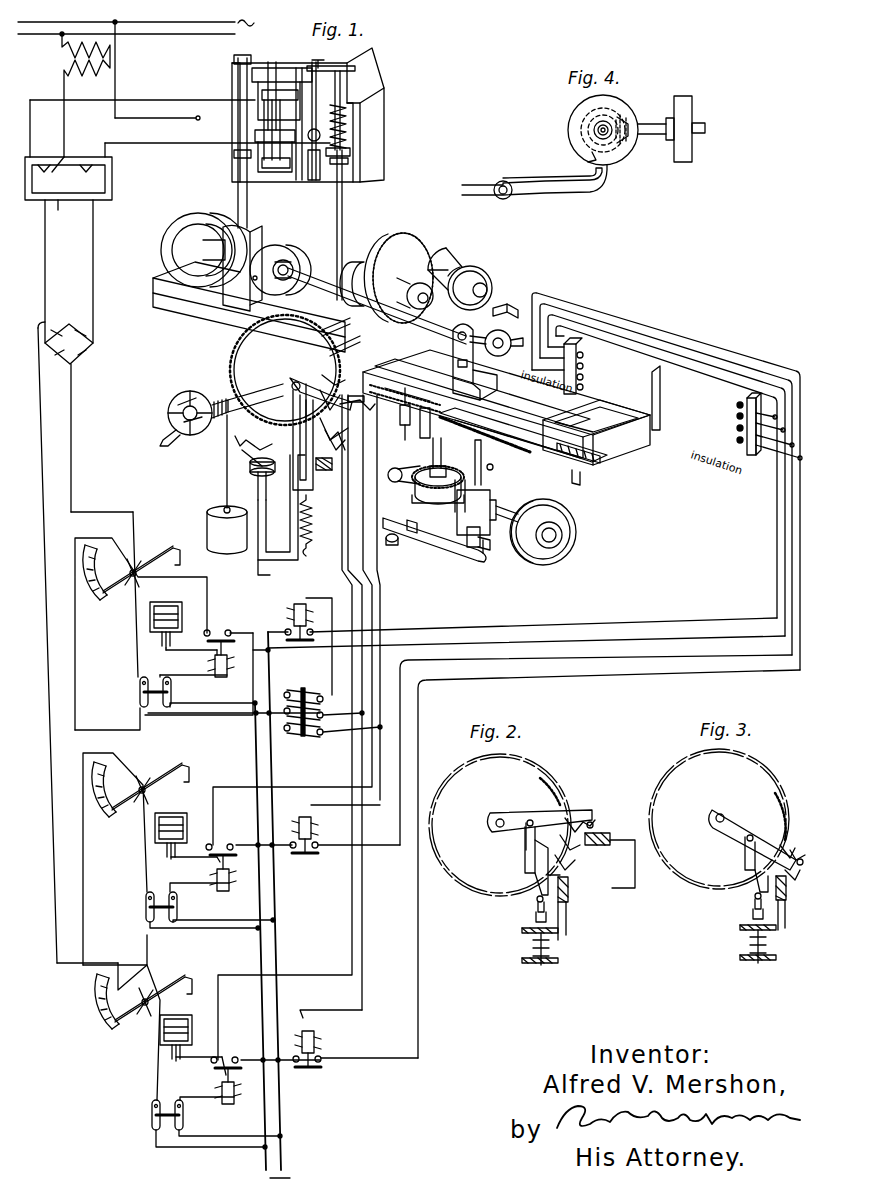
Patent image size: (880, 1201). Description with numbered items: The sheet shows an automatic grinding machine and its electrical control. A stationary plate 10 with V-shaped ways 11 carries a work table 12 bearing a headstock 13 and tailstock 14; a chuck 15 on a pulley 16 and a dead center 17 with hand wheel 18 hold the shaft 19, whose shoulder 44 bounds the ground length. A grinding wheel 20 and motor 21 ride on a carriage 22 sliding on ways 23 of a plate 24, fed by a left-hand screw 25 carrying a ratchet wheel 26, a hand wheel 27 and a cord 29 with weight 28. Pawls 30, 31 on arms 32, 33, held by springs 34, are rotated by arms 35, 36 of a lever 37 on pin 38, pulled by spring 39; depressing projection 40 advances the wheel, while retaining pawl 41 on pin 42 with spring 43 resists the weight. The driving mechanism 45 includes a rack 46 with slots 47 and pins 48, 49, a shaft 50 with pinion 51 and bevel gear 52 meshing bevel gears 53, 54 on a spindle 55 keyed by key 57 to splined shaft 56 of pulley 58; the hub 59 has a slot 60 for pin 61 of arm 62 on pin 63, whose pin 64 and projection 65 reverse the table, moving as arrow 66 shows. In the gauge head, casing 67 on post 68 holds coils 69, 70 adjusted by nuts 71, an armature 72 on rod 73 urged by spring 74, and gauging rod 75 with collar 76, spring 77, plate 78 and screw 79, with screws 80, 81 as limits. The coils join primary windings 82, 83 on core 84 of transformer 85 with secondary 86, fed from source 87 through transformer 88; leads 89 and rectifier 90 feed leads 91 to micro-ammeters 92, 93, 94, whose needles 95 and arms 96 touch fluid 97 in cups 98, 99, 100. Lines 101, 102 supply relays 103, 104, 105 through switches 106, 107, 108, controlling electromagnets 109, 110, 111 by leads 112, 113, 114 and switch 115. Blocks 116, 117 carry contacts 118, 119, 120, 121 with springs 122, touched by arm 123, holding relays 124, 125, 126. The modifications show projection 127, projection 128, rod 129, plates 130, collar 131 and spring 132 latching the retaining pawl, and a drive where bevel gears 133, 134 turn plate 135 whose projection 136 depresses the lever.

In FIG. 1, the stationary plate 10 is at (634, 462).
In FIG. 1, the V-shaped ways 11 is at (604, 440).
In FIG. 1, the work table 12 is at (506, 404).
In FIG. 1, the headstock 13 is at (224, 288).
In FIG. 1, the tailstock 14 is at (450, 368).
In FIG. 1, the chuck 15 is at (286, 248).
In FIG. 1, the rotatable pulley 16 is at (186, 225).
In FIG. 1, the dead center 17 is at (475, 362).
In FIG. 1, the hand wheel 18 is at (508, 354).
In FIG. 1, the shaft 19 is at (318, 290).
In FIG. 1, the grinding wheel 20 is at (402, 238).
In FIG. 1, the electric motor 21 is at (470, 255).
In FIG. 1, the carriage 22 is at (340, 296).
In FIG. 1, the V-shaped ways 23 is at (517, 303).
In FIG. 1, the stationary plate 24 is at (500, 302).
In FIG. 1, the left-hand screw 25 is at (344, 354).
In FIG. 1, the ratchet wheel 26 is at (234, 353).
In FIG. 2, the ratchet wheel 26 is at (552, 781).
In FIG. 3, the ratchet wheel 26 is at (788, 828).
In FIG. 1, the hand wheel 27 is at (182, 392).
In FIG. 1, the weight 28 is at (214, 506).
In FIG. 1, the cord 29 is at (226, 478).
In FIG. 1, the pawl 30 is at (330, 426).
In FIG. 2, the pawl 30 is at (590, 820).
In FIG. 3, the pawl 30 is at (796, 850).
In FIG. 1, the pawl 31 is at (337, 374).
In FIG. 2, the pawl 31 is at (581, 848).
In FIG. 1, the arm 32 is at (282, 388).
In FIG. 2, the arm 32 is at (515, 812).
In FIG. 3, the arm 32 is at (718, 830).
In FIG. 1, the arm 33 is at (293, 376).
In FIG. 2, the arm 33 is at (500, 830).
In FIG. 1, the springs 34 is at (338, 386).
In FIG. 2, the springs 34 is at (574, 812).
In FIG. 3, the springs 34 is at (798, 862).
In FIG. 1, the upwardly extending arm 35 is at (293, 418).
In FIG. 2, the upwardly extending arm 35 is at (525, 850).
In FIG. 3, the upwardly extending arm 35 is at (745, 855).
In FIG. 1, the upwardly extending arm 36 is at (306, 382).
In FIG. 2, the upwardly extending arm 36 is at (538, 832).
In FIG. 1, the lever 37 is at (428, 541).
In FIG. 4, the lever 37 is at (476, 185).
In FIG. 1, the stationary pin 38 is at (393, 550).
In FIG. 4, the stationary pin 38 is at (500, 198).
In FIG. 1, the helical tension spring 39 is at (313, 514).
In FIG. 1, the bevel shaped projection 40 is at (490, 558).
In FIG. 4, the bevel shaped projection 40 is at (610, 176).
In FIG. 1, the retaining pawl 41 is at (250, 473).
In FIG. 2, the retaining pawl 41 is at (534, 896).
In FIG. 3, the retaining pawl 41 is at (755, 893).
In FIG. 1, the stationary pin 42 is at (248, 459).
In FIG. 1, the tension spring 43 is at (252, 435).
In FIG. 1, the shoulder 44 is at (290, 264).
In FIG. 1, the driving mechanism 45 is at (450, 468).
In FIG. 1, the rack 46 is at (520, 456).
In FIG. 1, the slots 47 is at (412, 386).
In FIG. 1, the pin 48 is at (570, 478).
In FIG. 1, the pin 49 is at (401, 414).
In FIG. 1, the shaft 50 is at (433, 453).
In FIG. 1, the pinion 51 is at (420, 425).
In FIG. 1, the bevel gear 52 is at (452, 476).
In FIG. 1, the bevel gear 53 is at (455, 508).
In FIG. 1, the bevel gear 54 is at (412, 490).
In FIG. 1, the spindle 55 is at (438, 496).
In FIG. 1, the splined shaft 56 is at (480, 520).
In FIG. 4, the splined shaft 56 is at (654, 134).
In FIG. 1, the key 57 is at (508, 511).
In FIG. 1, the pulley 58 is at (574, 522).
In FIG. 4, the pulley 58 is at (684, 96).
In FIG. 1, the hub 59 is at (490, 544).
In FIG. 1, the circular slot 60 is at (503, 506).
In FIG. 1, the pin 61 is at (462, 518).
In FIG. 1, the arm 62 is at (491, 496).
In FIG. 1, the stationary pin 63 is at (493, 468).
In FIG. 1, the pin 64 is at (483, 466).
In FIG. 1, the bevel shaped projection 65 is at (467, 536).
In FIG. 1, the arrow 66 is at (530, 440).
In FIG. 1, the casing 67 is at (376, 92).
In FIG. 1, the post 68 is at (237, 180).
In FIG. 1, the coil 69 is at (292, 72).
In FIG. 1, the coil 70 is at (282, 176).
In FIG. 1, the nuts 71 is at (277, 72).
In FIG. 1, the armature 72 is at (300, 176).
In FIG. 1, the rod 73 is at (315, 180).
In FIG. 1, the helical compression spring 74 is at (350, 161).
In FIG. 1, the gauging rod 75 is at (343, 228).
In FIG. 1, the collar 76 is at (352, 150).
In FIG. 1, the helical compression spring 77 is at (348, 128).
In FIG. 1, the plate 78 is at (343, 80).
In FIG. 1, the adjustable screw 79 is at (322, 64).
In FIG. 1, the adjustable screw 80 is at (340, 66).
In FIG. 1, the adjustable screw 81 is at (311, 169).
In FIG. 1, the primary winding 82 is at (40, 165).
In FIG. 1, the primary winding 83 is at (84, 165).
In FIG. 1, the magnetic core 84 is at (100, 193).
In FIG. 1, the transformer 85 is at (78, 178).
In FIG. 1, the secondary winding 86 is at (62, 193).
In FIG. 1, the alternating current source 87 is at (186, 24).
In FIG. 1, the transformer 88 is at (112, 56).
In FIG. 1, the leads 89 is at (142, 102).
In FIG. 1, the full wave rectifier 90 is at (80, 358).
In FIG. 1, the leads 91 is at (70, 386).
In FIG. 1, the micro-ammeter 92 is at (143, 1031).
In FIG. 1, the micro-ammeter 93 is at (136, 859).
In FIG. 1, the micro-ammeter 94 is at (141, 634).
In FIG. 1, the indicating needles 95 is at (130, 582).
In FIG. 1, the metallic arms 96 is at (176, 551).
In FIG. 1, the electrically conducting fluid 97 is at (166, 606).
In FIG. 1, the metallic cup 98 is at (192, 1036).
In FIG. 1, the metallic cup 99 is at (188, 838).
In FIG. 1, the metallic cup 100 is at (183, 620).
In FIG. 1, the line 101 is at (262, 1158).
In FIG. 1, the line 102 is at (283, 1142).
In FIG. 1, the relay 103 is at (222, 1104).
In FIG. 1, the relay 104 is at (218, 884).
In FIG. 1, the relay 105 is at (216, 674).
In FIG. 1, the switch 106 is at (147, 1120).
In FIG. 1, the switch 107 is at (143, 910).
In FIG. 1, the switch 108 is at (140, 694).
In FIG. 1, the electromagnet 109 is at (328, 471).
In FIG. 2, the electromagnet 109 is at (608, 836).
In FIG. 1, the electromagnet 110 is at (366, 412).
In FIG. 1, the electromagnet 111 is at (258, 492).
In FIG. 2, the electromagnet 111 is at (568, 896).
In FIG. 3, the electromagnet 111 is at (787, 890).
In FIG. 1, the leads 112 is at (342, 551).
In FIG. 2, the leads 112 is at (633, 882).
In FIG. 1, the leads 113 is at (370, 440).
In FIG. 1, the leads 114 is at (270, 525).
In FIG. 2, the leads 114 is at (569, 922).
In FIG. 3, the leads 114 is at (788, 918).
In FIG. 1, the switch 115 is at (300, 738).
In FIG. 1, the block of insulating material 116 is at (580, 340).
In FIG. 1, the block of insulating material 117 is at (756, 393).
In FIG. 1, the contact 118 is at (584, 387).
In FIG. 1, the contact 119 is at (584, 377).
In FIG. 1, the contact 120 is at (584, 366).
In FIG. 1, the contact 121 is at (584, 355).
In FIG. 1, the compression springs 122 is at (574, 396).
In FIG. 1, the metallic arm 123 is at (662, 385).
In FIG. 1, the relay 124 is at (322, 1030).
In FIG. 1, the relay 125 is at (312, 815).
In FIG. 1, the relay 126 is at (292, 612).
In FIG. 2, the projection 127 is at (536, 908).
In FIG. 3, the projection 127 is at (753, 904).
In FIG. 2, the bevel-faced projection 128 is at (535, 918).
In FIG. 3, the bevel-faced projection 128 is at (752, 915).
In FIG. 2, the rod 129 is at (536, 964).
In FIG. 3, the rod 129 is at (752, 961).
In FIG. 2, the stationary plates 130 is at (551, 958).
In FIG. 3, the stationary plates 130 is at (770, 955).
In FIG. 2, the collar 131 is at (530, 936).
In FIG. 3, the collar 131 is at (746, 933).
In FIG. 2, the helical compression spring 132 is at (531, 948).
In FIG. 3, the helical compression spring 132 is at (748, 946).
In FIG. 4, the bevel gear 133 is at (628, 118).
In FIG. 4, the bevel gear 134 is at (590, 118).
In FIG. 4, the plate 135 is at (568, 129).
In FIG. 4, the projection 136 is at (584, 162).